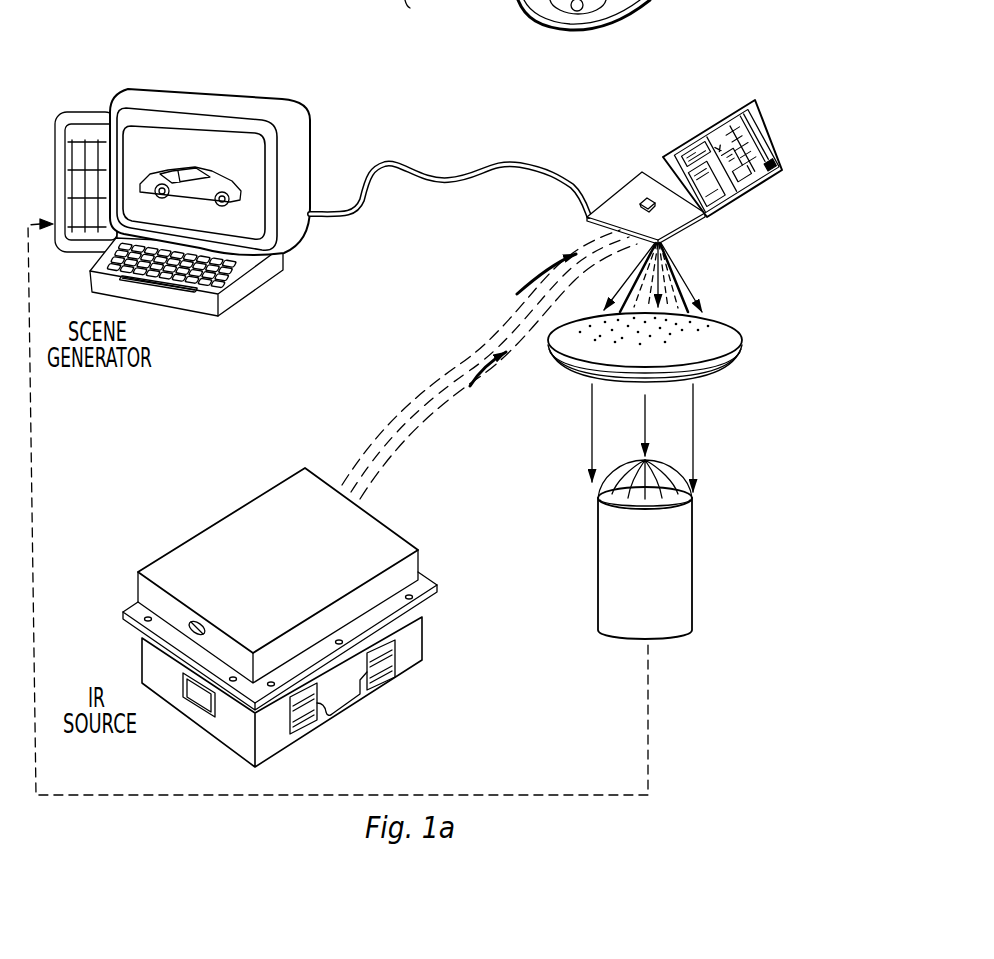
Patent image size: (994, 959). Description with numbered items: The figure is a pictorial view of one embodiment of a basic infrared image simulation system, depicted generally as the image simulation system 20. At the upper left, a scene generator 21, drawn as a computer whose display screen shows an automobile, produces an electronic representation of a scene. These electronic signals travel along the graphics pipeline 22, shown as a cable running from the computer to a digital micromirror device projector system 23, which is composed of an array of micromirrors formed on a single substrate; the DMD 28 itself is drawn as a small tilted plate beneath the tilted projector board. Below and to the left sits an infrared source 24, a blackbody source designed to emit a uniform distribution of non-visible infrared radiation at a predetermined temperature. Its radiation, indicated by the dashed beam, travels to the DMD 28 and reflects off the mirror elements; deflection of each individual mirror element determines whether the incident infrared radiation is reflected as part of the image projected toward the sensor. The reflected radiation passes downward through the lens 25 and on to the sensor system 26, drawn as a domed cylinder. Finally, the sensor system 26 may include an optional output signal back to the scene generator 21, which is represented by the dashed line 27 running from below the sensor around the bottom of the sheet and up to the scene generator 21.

The image simulation system 20 is at (683, 678).
The scene generator 21 is at (127, 96).
The graphics pipeline 22 is at (503, 165).
The digital micromirror device (DMD) projector system 23 is at (767, 118).
The infrared source 24 is at (255, 508).
The lens 25 is at (730, 337).
The sensor system 26 is at (685, 581).
The dashed line 27 is at (98, 798).
The DMD 28 is at (645, 201).